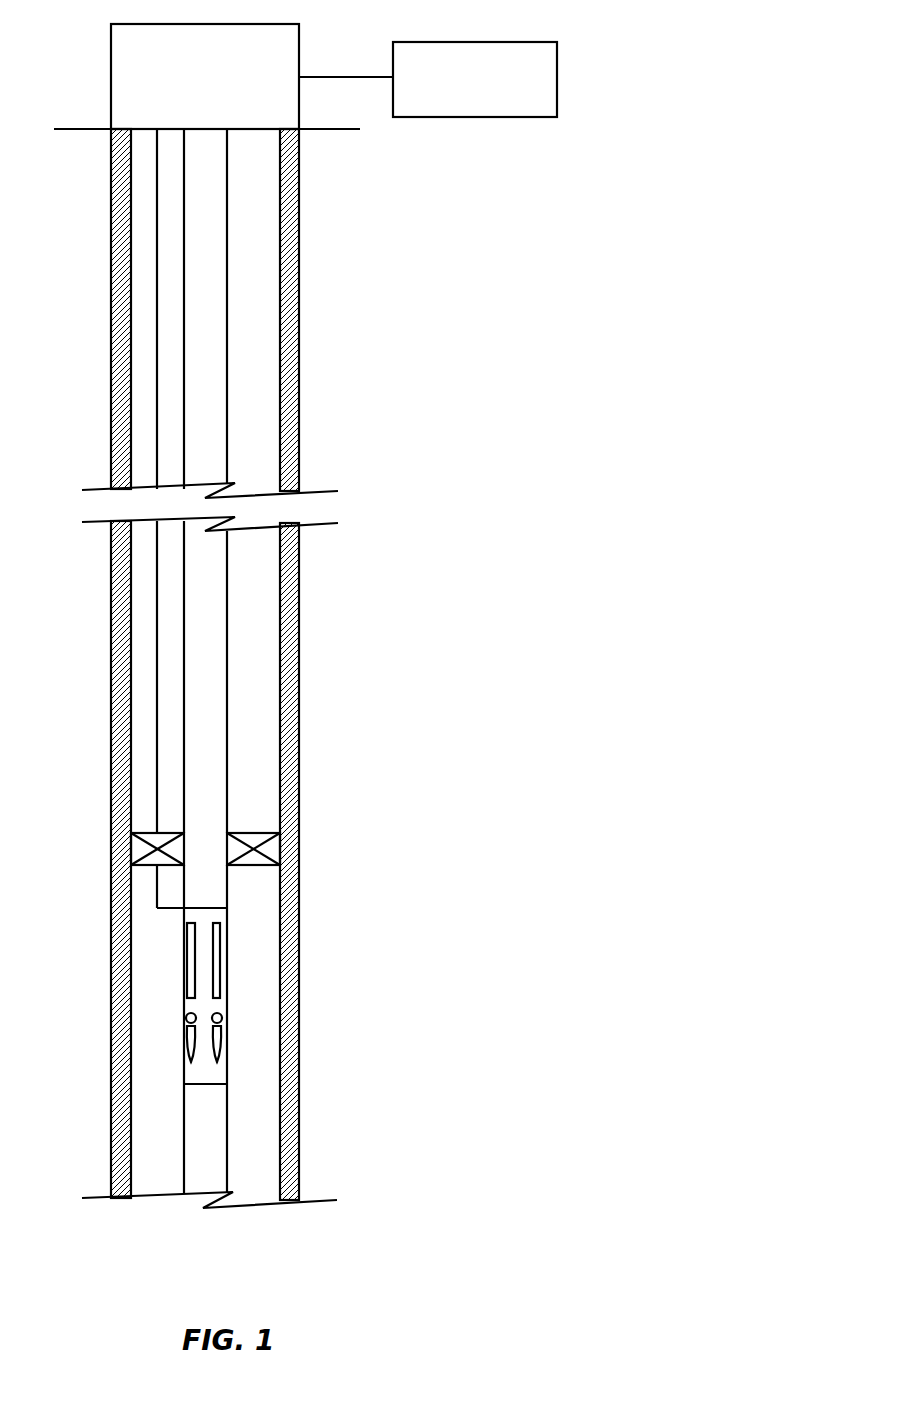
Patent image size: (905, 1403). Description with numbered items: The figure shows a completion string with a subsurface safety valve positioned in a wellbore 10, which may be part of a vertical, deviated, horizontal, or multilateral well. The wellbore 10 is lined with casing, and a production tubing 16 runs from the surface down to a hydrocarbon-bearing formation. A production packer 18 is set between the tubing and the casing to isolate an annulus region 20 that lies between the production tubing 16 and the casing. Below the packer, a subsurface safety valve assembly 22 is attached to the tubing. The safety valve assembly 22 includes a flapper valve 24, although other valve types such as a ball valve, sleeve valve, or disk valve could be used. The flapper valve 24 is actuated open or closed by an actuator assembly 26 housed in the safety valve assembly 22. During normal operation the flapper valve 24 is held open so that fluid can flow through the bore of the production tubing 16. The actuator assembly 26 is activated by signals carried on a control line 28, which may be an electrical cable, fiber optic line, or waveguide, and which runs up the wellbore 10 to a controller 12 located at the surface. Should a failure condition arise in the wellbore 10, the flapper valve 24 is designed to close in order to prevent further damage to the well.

The wellbore 10 is at (234, 1222).
The controller 12 is at (487, 59).
The production tubing 16 is at (272, 481).
The production packer 18 is at (247, 853).
The annulus region 20 is at (294, 695).
The subsurface safety valve assembly 22 is at (259, 1029).
The flapper valve 24 is at (235, 664).
The actuator assembly 26 is at (274, 960).
The control line 28 is at (104, 518).